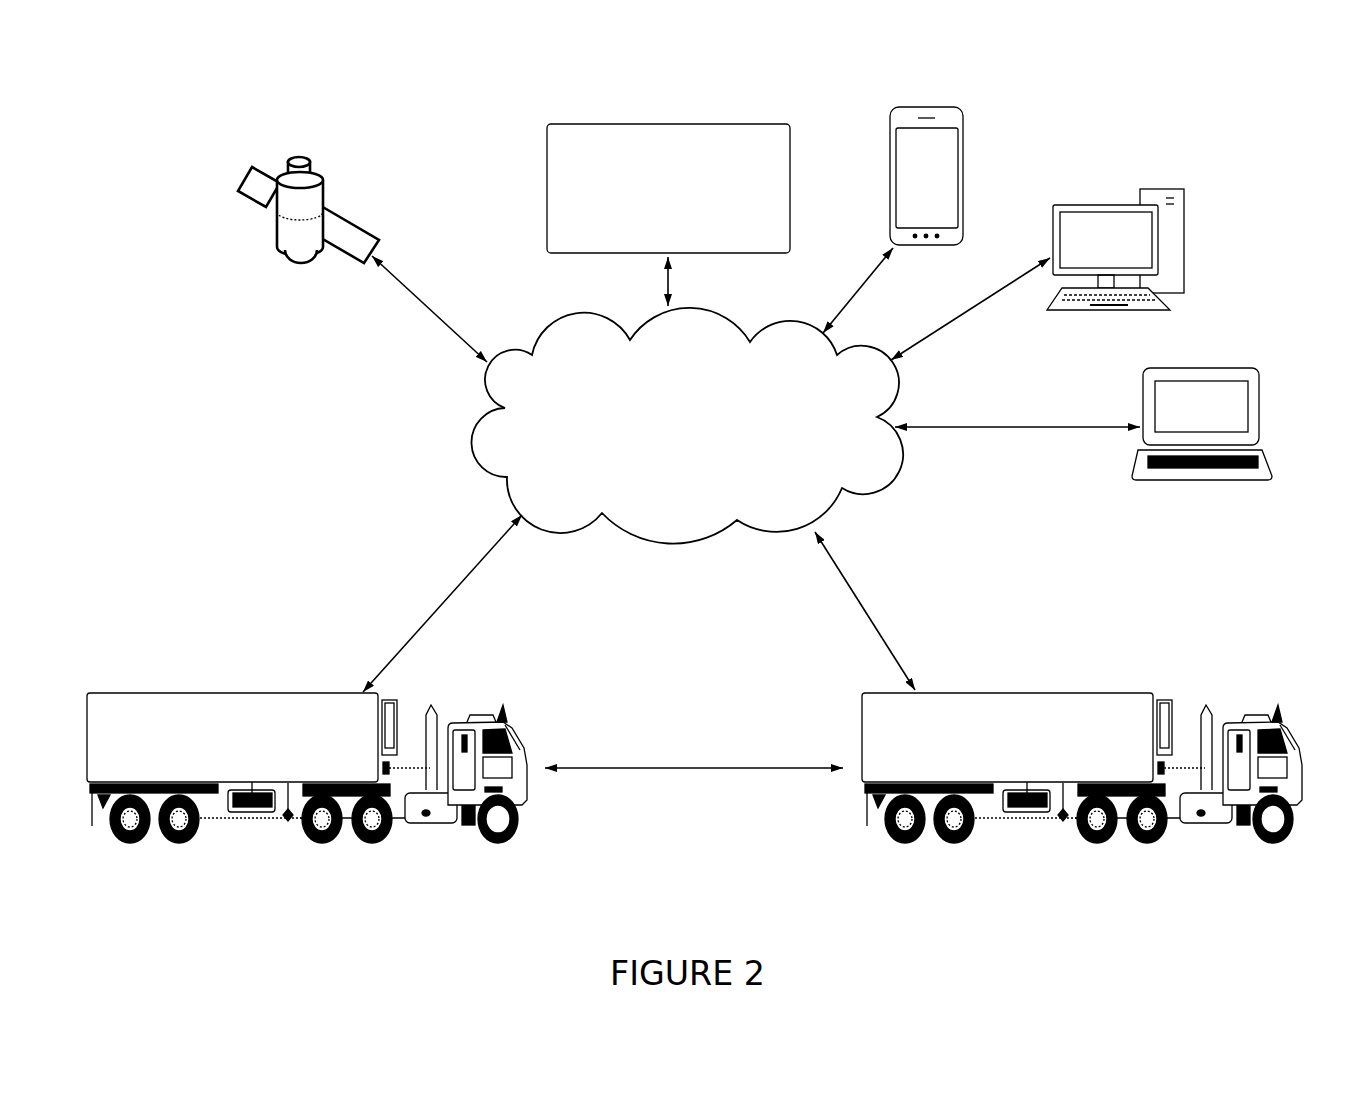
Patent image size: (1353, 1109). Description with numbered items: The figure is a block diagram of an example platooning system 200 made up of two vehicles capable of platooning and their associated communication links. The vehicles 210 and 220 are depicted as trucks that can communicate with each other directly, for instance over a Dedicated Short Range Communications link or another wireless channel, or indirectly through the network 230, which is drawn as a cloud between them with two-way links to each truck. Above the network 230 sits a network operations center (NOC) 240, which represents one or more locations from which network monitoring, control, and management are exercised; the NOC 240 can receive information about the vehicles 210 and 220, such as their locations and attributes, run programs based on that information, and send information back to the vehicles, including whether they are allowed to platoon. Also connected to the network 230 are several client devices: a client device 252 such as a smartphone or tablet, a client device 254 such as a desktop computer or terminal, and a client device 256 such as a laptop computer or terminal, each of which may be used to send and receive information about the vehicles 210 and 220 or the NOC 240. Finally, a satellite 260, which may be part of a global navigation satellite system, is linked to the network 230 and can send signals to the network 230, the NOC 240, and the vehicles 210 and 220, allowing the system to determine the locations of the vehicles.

The system 200 is at (181, 88).
The vehicle 210 is at (1113, 693).
The vehicle 220 is at (276, 693).
The network 230 is at (707, 448).
The network operations center (NOC) 240 is at (545, 194).
The client device 252 is at (966, 150).
The client device 254 is at (1163, 190).
The client device 256 is at (1200, 368).
The satellite 260 is at (277, 237).